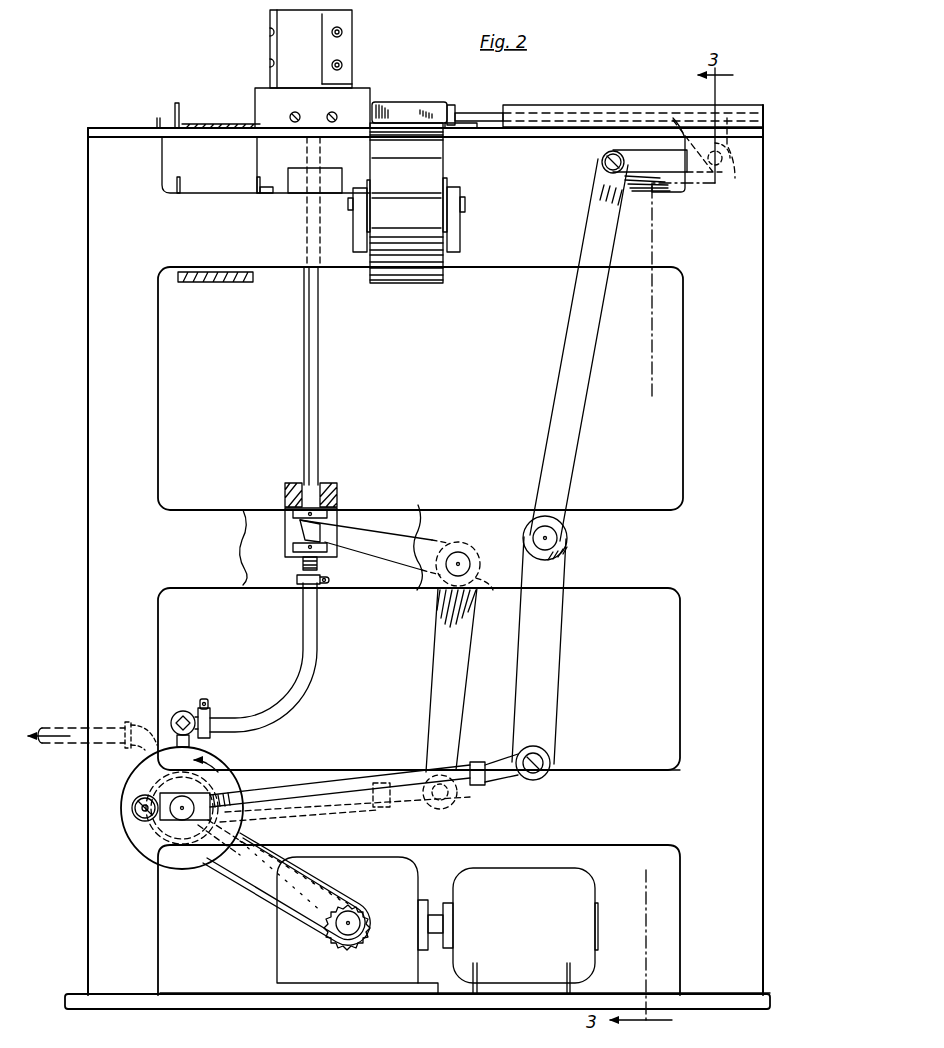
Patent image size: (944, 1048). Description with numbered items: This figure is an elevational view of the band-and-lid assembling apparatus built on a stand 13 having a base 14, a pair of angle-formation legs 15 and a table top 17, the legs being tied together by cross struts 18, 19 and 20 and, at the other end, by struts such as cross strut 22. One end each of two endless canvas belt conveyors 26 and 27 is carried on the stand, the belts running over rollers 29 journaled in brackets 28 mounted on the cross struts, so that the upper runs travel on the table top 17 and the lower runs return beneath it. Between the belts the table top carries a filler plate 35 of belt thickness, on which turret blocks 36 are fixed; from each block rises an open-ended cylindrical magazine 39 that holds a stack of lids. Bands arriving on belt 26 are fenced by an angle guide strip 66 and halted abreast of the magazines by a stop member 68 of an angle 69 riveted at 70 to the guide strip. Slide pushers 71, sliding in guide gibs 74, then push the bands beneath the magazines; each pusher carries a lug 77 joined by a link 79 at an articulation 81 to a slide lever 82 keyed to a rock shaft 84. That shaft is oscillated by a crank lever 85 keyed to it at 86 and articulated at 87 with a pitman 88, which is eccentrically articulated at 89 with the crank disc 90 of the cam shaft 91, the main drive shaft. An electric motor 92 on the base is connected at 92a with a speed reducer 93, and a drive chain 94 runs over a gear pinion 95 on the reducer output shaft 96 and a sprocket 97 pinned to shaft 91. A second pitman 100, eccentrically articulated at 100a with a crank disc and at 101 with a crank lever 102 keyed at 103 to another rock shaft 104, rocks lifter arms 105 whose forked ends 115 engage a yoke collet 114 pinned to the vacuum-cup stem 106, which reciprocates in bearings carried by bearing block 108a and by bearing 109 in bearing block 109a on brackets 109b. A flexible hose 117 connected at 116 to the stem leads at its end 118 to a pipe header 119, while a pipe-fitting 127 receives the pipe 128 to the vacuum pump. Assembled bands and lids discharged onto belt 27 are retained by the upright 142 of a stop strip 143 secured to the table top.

The stand 13 is at (82, 138).
The base 14 is at (215, 995).
The legs 15 is at (95, 433).
The table top 17 is at (135, 128).
The cross strut 18 is at (518, 268).
The cross strut 19 is at (460, 510).
The cross strut 20 is at (645, 771).
The cross strut 22 is at (418, 505).
The endless belt conveyor 26 is at (405, 284).
The endless belt conveyor 27 is at (220, 283).
The brackets 28 is at (355, 220).
The rollers 29 is at (208, 190).
The filler plate 35 is at (262, 125).
The turret blocks 36 is at (258, 96).
The cylindrical magazine 39 is at (275, 45).
The angle guide strip 66 is at (468, 130).
The stop member 68 is at (403, 102).
The angle 69 is at (450, 105).
The rivet 70 is at (466, 113).
The slide pusher 71 is at (500, 110).
The guide gibs 74 is at (612, 109).
The lug 77 is at (699, 159).
The link 79 is at (632, 152).
The articulation 81 is at (602, 166).
The slide lever 82 is at (578, 437).
The rock shaft 84 is at (558, 538).
The crank lever 85 is at (556, 669).
The key connection 86 is at (565, 556).
The articulation 87 is at (548, 758).
The pitman 88 is at (360, 780).
The eccentric articulation 89 is at (142, 820).
The crank disc 90 is at (140, 860).
The cam shaft 91 is at (183, 820).
The electric motor 92 is at (555, 868).
The motor connection 92a is at (436, 905).
The speed reducer 93 is at (395, 857).
The drive chain 94 is at (250, 882).
The gear pinion 95 is at (360, 913).
The output shaft 96 is at (352, 930).
The sprocket 97 is at (205, 832).
The pitman 100 is at (325, 814).
The eccentric articulation 100a is at (134, 800).
The articulation 101 is at (458, 795).
The crank lever 102 is at (462, 638).
The key connection 103 is at (470, 598).
The rock shaft 104 is at (462, 561).
The lifter arm 105 is at (378, 560).
The stem 106 is at (319, 355).
The bearing block 108a is at (320, 172).
The bearing 109 is at (265, 513).
The bearing block 109a is at (285, 495).
The brackets 109b is at (285, 530).
The yoke collet 114 is at (300, 562).
The forked end 115 is at (330, 520).
The hose connection 116 is at (320, 585).
The flexible hose 117 is at (318, 668).
The hose end 118 is at (210, 710).
The pipe header 119 is at (183, 711).
The pipe-fitting 127 is at (138, 722).
The pipe 128 is at (58, 726).
The upright 142 is at (177, 103).
The stop strip 143 is at (157, 118).